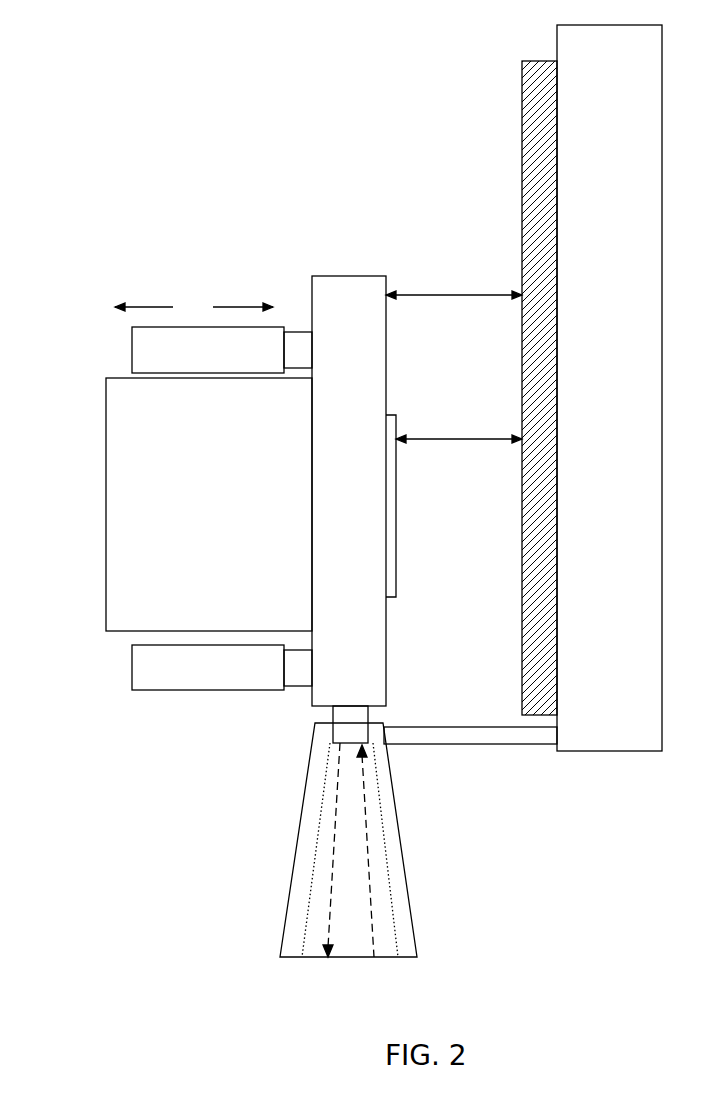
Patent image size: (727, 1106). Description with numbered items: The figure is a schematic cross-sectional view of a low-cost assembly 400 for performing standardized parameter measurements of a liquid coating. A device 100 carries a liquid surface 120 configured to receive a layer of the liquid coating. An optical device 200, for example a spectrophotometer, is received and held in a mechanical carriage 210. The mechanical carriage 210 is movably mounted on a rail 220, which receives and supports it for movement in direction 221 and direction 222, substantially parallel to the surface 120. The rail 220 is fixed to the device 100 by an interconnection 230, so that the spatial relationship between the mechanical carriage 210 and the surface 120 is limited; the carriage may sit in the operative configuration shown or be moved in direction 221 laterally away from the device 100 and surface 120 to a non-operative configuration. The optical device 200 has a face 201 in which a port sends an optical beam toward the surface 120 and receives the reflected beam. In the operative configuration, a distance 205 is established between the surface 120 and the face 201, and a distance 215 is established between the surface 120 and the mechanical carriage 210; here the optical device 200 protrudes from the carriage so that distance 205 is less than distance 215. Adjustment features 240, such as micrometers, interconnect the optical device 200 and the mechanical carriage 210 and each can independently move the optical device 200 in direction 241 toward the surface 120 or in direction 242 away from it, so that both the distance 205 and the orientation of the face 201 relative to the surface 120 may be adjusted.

The device 100 is at (609, 388).
The liquid surface 120 is at (522, 155).
The optical device 200 is at (209, 504).
The face 201 is at (396, 530).
The distance 205 is at (465, 437).
The mechanical carriage 210 is at (345, 276).
The distance 215 is at (455, 294).
The rail 220 is at (313, 748).
The direction 221 is at (330, 896).
The direction 222 is at (367, 838).
The interconnection 230 is at (480, 742).
The adjustment features 240 is at (143, 350).
The direction 241 is at (243, 307).
The direction 242 is at (162, 307).
The assembly 400 is at (146, 96).